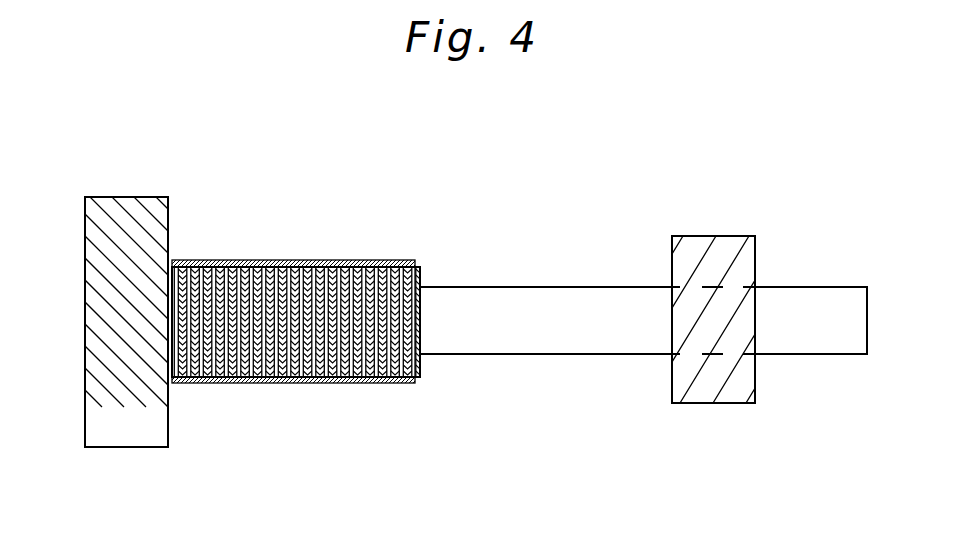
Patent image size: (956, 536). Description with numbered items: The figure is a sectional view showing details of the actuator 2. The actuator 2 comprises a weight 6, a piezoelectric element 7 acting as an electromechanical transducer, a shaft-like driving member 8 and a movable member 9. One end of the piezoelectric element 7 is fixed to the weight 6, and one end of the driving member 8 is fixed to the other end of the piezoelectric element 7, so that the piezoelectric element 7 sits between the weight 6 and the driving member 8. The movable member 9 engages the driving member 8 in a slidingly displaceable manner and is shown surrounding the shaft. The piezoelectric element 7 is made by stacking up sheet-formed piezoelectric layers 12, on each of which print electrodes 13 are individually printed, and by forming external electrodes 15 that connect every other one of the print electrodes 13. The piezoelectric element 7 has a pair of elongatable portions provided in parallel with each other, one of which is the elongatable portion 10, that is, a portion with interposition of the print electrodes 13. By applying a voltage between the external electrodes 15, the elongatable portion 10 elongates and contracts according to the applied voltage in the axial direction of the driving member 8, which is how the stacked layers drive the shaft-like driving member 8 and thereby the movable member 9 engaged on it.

The actuator 2 is at (323, 280).
The weight 6 is at (122, 197).
The piezoelectric element 7 is at (268, 257).
The driving member 8 is at (549, 286).
The movable member 9 is at (712, 236).
The elongatable portion 10 is at (400, 258).
The piezoelectric layer 12 is at (395, 258).
The print electrode 13 is at (243, 257).
The external electrode 15 is at (310, 259).